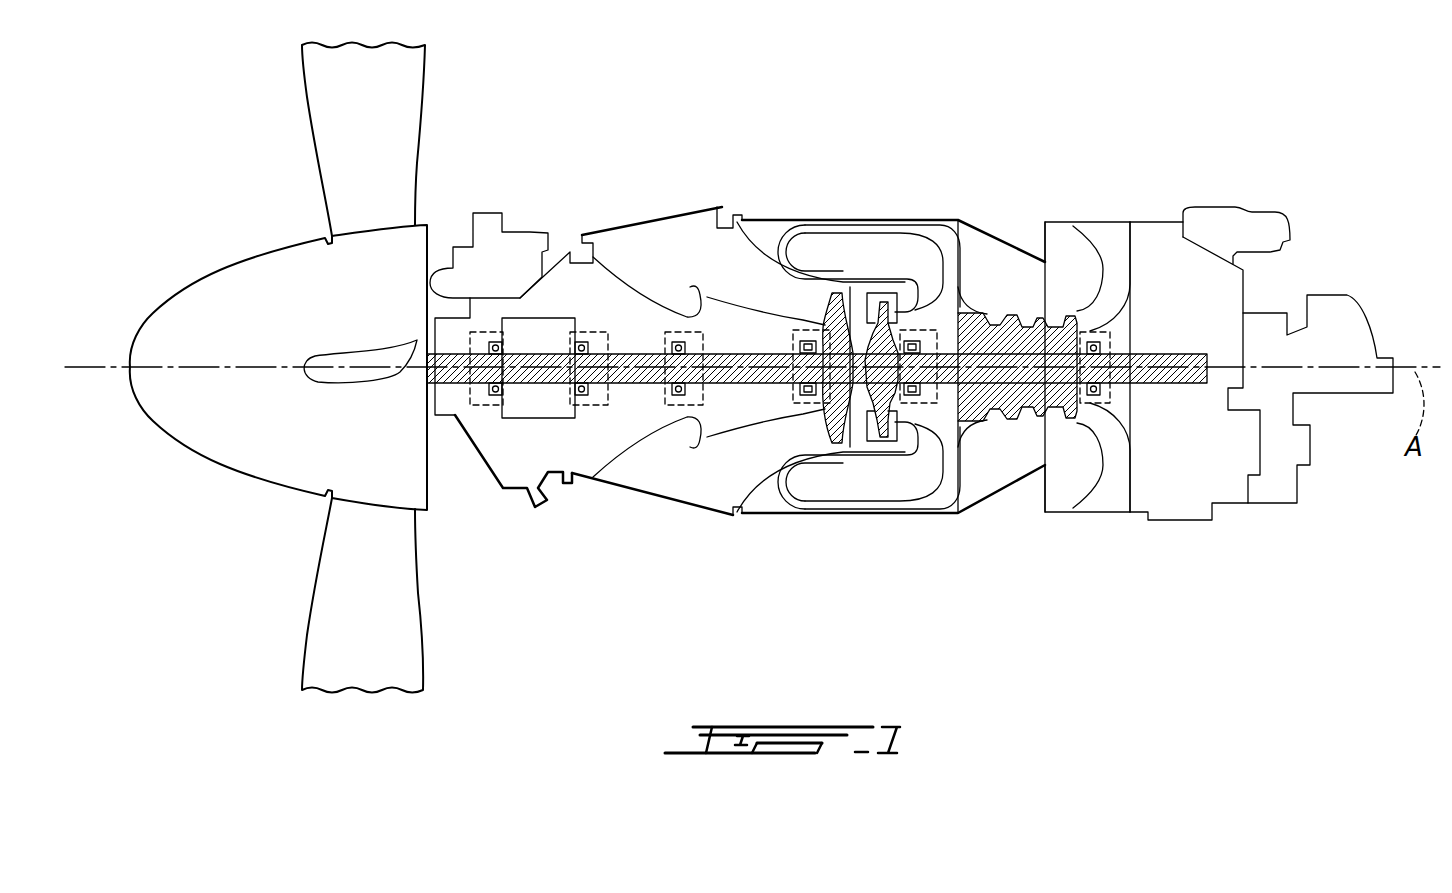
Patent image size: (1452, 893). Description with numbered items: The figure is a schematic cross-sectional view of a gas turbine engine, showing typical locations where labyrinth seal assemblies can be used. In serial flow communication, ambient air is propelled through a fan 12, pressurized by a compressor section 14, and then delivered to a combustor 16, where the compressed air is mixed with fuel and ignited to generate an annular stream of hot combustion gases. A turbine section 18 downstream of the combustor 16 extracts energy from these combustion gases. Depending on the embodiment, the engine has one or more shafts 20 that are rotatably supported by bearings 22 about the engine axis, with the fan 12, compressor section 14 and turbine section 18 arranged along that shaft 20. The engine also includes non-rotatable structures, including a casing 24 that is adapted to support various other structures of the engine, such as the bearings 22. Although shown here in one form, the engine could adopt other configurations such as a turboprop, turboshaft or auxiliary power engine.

The fan 12 is at (367, 600).
The compressor section 14 is at (843, 292).
The combustor 16 is at (870, 250).
The turbine section 18 is at (1040, 312).
The shaft 20 is at (468, 388).
The bearings 22 is at (1085, 406).
The casing 24 is at (1000, 492).